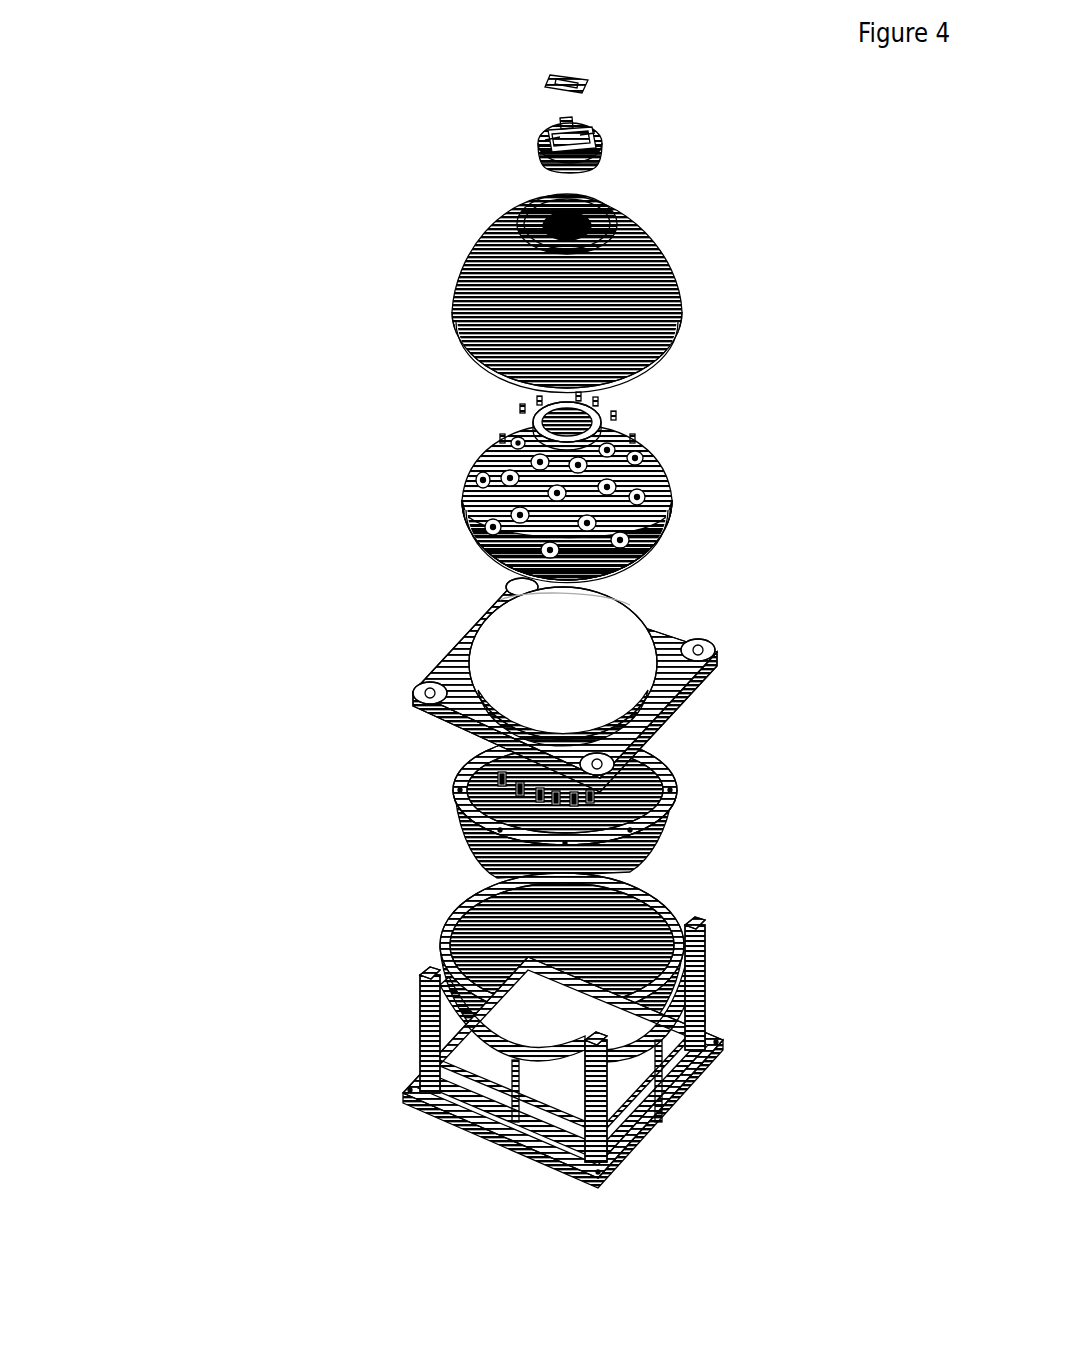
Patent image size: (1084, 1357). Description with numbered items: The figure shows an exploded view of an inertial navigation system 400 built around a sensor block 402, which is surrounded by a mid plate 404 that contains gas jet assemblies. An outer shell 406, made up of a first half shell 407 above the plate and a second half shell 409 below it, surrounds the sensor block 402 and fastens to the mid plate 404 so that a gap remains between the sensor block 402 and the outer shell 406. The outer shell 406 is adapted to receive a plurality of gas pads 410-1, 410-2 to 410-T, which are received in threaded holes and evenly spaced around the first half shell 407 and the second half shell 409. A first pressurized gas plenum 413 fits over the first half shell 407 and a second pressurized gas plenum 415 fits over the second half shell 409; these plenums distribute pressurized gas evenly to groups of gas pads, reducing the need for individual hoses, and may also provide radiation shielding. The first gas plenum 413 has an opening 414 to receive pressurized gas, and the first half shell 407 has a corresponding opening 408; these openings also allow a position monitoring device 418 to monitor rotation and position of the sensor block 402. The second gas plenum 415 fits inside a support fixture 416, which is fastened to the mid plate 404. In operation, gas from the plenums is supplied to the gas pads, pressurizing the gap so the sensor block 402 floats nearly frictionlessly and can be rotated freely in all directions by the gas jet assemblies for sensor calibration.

The inertial navigation system 400 is at (253, 1118).
The sensor block 402 is at (520, 638).
The mid plate 404 is at (432, 668).
The outer shell 406 is at (657, 530).
The first half shell 407 is at (456, 508).
The opening 408 is at (520, 416).
The second half shell 409 is at (655, 810).
The gas pad 410-1 is at (505, 780).
The gas pad 410-2 is at (530, 800).
The gas pad 410-T is at (570, 810).
The first pressurized gas plenum 413 is at (455, 308).
The opening 414 is at (540, 226).
The second pressurized gas plenum 415 is at (440, 930).
The support fixture 416 is at (425, 1020).
The position monitoring device 418 is at (610, 138).